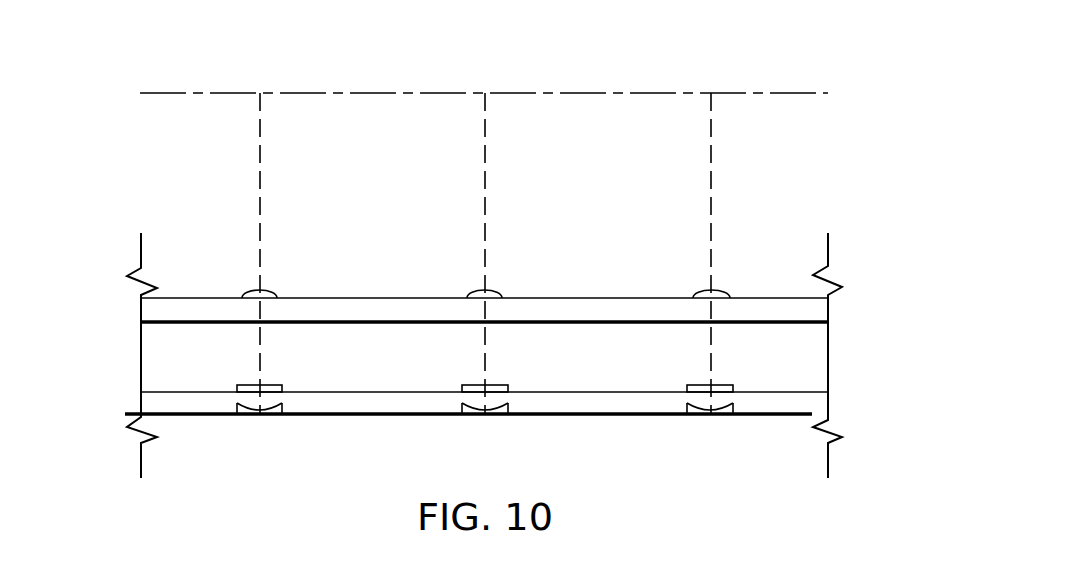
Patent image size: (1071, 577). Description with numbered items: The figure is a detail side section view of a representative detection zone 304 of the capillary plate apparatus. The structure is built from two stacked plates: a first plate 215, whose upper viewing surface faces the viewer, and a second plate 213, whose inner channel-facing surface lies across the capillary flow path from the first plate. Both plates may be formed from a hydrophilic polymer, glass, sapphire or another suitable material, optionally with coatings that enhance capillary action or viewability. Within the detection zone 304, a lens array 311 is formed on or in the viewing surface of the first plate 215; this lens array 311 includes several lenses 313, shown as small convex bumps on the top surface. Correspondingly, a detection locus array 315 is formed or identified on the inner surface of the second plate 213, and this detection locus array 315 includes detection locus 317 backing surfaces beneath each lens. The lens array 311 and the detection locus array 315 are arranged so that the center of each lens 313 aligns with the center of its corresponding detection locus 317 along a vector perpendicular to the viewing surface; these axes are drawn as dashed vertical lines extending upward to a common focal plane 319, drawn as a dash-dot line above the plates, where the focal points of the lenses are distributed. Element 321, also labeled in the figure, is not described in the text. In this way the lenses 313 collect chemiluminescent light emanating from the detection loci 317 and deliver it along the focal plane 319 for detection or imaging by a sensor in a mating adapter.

The detection zone 304 is at (738, 158).
The focal plane 319 is at (347, 92).
The lens array 311 is at (485, 183).
The first plate 215 is at (150, 310).
The second plate 213 is at (150, 404).
The lens 313 is at (249, 292).
The light source 321 is at (246, 385).
The detection locus array 315 is at (722, 416).
The detection locus 317 is at (475, 416).